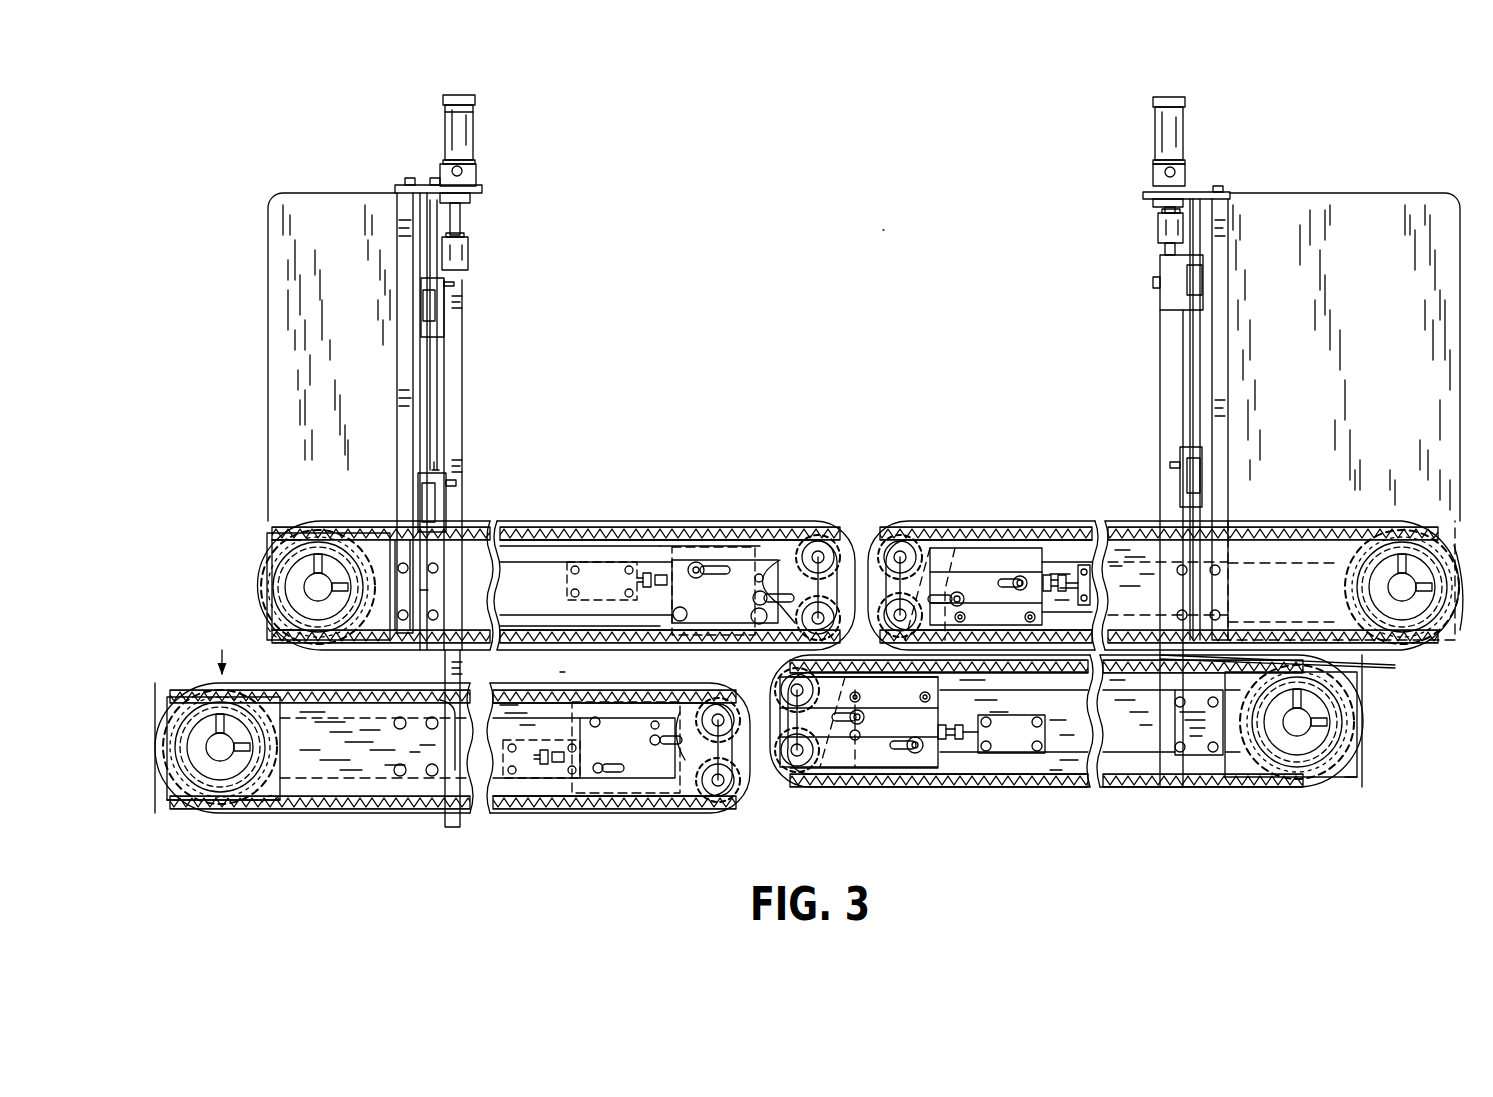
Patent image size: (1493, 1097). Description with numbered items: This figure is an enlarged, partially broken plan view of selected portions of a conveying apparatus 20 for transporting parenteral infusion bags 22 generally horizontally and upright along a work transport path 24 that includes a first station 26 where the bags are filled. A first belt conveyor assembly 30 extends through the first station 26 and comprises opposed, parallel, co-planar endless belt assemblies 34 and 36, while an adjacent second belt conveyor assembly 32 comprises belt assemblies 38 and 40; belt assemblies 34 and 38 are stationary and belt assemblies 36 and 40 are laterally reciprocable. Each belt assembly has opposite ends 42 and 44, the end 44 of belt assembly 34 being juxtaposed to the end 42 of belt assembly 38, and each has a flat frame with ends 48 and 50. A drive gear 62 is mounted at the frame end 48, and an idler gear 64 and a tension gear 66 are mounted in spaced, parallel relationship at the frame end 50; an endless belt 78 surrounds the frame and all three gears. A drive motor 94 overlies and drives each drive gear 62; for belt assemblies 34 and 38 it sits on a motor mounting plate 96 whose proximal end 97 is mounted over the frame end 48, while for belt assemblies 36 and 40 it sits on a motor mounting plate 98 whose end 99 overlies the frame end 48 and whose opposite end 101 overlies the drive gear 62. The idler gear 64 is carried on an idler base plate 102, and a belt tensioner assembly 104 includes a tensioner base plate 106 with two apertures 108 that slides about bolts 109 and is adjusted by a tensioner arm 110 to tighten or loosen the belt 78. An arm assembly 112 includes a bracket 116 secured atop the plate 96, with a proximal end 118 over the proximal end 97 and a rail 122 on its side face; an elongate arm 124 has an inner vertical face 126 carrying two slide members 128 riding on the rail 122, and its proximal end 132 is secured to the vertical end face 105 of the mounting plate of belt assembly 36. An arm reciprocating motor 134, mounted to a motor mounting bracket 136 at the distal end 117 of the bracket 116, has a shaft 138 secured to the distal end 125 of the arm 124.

The conveying apparatus 20 is at (890, 228).
The parenteral infusion bags 22 is at (1372, 661).
The work transport path 24 is at (605, 672).
The first station 26 is at (676, 658).
The first belt conveyor assembly 30 is at (468, 878).
The second belt conveyor assembly 32 is at (935, 840).
The belt assembly 34 is at (592, 520).
The belt assembly 36 is at (520, 812).
The belt assembly 38 is at (1123, 519).
The belt assembly 40 is at (1138, 790).
The end 42 is at (868, 532).
The end 44 is at (843, 526).
The frame end 48 is at (960, 560).
The frame end 50 is at (780, 560).
The drive gear 62 is at (268, 628).
The idler gear 64 is at (808, 598).
The tension gear 66 is at (812, 522).
The endless belt 78 is at (645, 521).
The drive motor 94 is at (315, 567).
The motor mounting plate 96 is at (322, 190).
The proximal end 97 is at (283, 638).
The motor mounting plate 98 is at (172, 686).
The end 99 is at (415, 762).
The end 101 is at (175, 787).
The idler base plate 102 is at (722, 558).
The belt tensioner assembly 104 is at (690, 545).
The inner peripheral vertical end face 105 is at (447, 697).
The tensioner base plate 106 is at (929, 642).
The apertures 108 is at (902, 750).
The bolts 109 is at (748, 575).
The tensioner arm 110 is at (1005, 748).
The arm assembly 112 is at (480, 113).
The bracket 116 is at (398, 232).
The distal end 117 is at (402, 200).
The proximal end 118 is at (404, 570).
The rail 122 is at (425, 403).
The arm 124 is at (462, 368).
The distal end 125 is at (458, 275).
The inner vertical face 126 is at (438, 452).
The slide members 128 is at (437, 307).
The proximal end 132 is at (445, 816).
The arm reciprocating motor 134 is at (478, 133).
The motor mounting bracket 136 is at (420, 178).
The shaft 138 is at (465, 217).